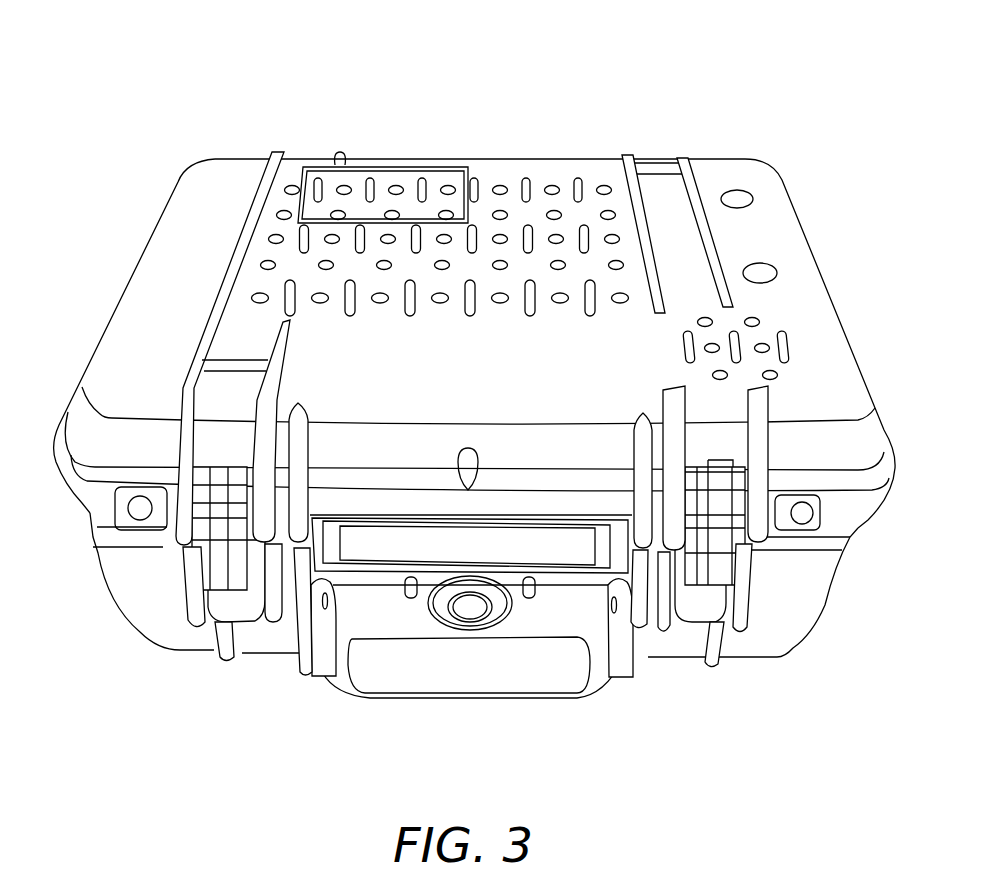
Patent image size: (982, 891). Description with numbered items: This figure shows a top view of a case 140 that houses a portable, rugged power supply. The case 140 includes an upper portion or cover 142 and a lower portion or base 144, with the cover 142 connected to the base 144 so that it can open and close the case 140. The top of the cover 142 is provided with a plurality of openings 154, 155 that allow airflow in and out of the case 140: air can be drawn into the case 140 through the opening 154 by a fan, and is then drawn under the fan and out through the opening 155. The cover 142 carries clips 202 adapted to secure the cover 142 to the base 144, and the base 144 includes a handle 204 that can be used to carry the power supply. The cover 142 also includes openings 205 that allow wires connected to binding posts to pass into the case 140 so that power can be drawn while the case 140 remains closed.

The case 140 is at (224, 136).
The cover 142 is at (136, 267).
The base 144 is at (168, 650).
The opening 154 is at (488, 208).
The opening 155 is at (758, 345).
The clips 202 is at (270, 622).
The handle 204 is at (483, 698).
The openings 205 is at (727, 176).